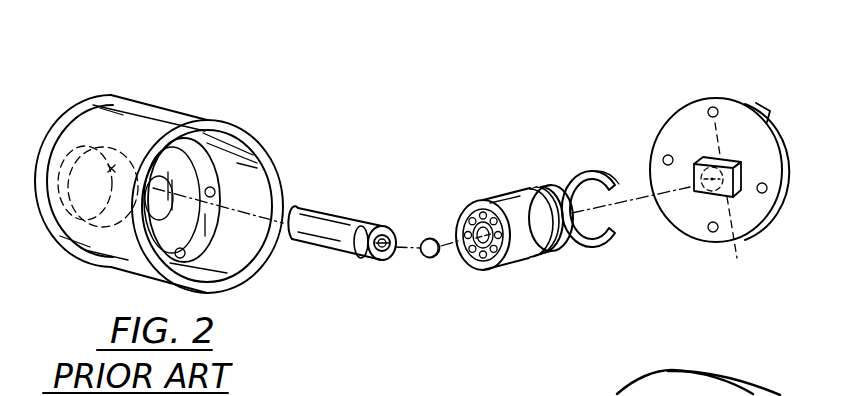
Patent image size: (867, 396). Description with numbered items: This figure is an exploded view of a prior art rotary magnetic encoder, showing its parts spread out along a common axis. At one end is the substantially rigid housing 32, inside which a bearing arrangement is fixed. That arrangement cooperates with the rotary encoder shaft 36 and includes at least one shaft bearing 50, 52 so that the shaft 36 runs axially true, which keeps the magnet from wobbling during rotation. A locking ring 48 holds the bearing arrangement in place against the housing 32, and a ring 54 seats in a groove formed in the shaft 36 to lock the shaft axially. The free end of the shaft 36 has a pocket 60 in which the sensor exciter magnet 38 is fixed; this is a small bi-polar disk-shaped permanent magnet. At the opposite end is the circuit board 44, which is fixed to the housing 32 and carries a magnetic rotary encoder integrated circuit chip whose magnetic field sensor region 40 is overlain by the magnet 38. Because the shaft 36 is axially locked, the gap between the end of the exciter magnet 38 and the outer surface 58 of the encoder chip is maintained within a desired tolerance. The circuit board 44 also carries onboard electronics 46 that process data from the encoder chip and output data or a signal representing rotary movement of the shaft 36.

The housing 32 is at (198, 58).
The rotary encoder shaft 36 is at (311, 212).
The sensor exciter magnet 38 is at (425, 265).
The magnetic field sensor region 40 is at (733, 206).
The circuit board 44 is at (690, 103).
The onboard electronics 46 is at (755, 98).
The locking ring 48 is at (584, 176).
The shaft bearing 50 is at (496, 198).
The shaft bearing 52 is at (538, 184).
The ring 54 is at (353, 228).
The outer surface 58 is at (700, 160).
The pocket 60 is at (389, 239).